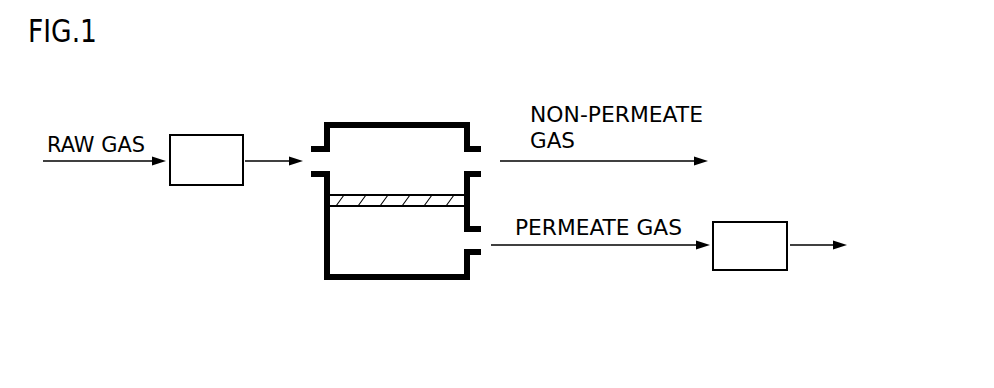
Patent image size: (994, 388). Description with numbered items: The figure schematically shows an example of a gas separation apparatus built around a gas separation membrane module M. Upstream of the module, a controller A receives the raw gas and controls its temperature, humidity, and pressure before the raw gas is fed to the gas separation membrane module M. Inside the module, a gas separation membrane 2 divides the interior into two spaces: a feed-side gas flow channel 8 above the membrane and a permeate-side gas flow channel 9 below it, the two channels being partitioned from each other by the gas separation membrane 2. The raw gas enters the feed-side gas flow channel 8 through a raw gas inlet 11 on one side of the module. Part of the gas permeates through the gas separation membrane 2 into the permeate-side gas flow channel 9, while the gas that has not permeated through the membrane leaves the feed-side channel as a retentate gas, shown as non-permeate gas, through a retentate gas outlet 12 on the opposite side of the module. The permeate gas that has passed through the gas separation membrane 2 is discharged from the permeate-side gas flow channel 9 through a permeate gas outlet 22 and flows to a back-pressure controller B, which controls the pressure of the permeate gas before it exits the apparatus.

The controller A is at (204, 135).
The back-pressure controller B is at (748, 222).
The gas separation membrane module M is at (465, 113).
The gas separation membrane 2 is at (411, 197).
The feed-side gas flow channel 8 is at (364, 112).
The permeate-side gas flow channel 9 is at (372, 243).
The raw gas inlet 11 is at (303, 150).
The retentate gas outlet 12 is at (483, 158).
The permeate gas outlet 22 is at (485, 252).